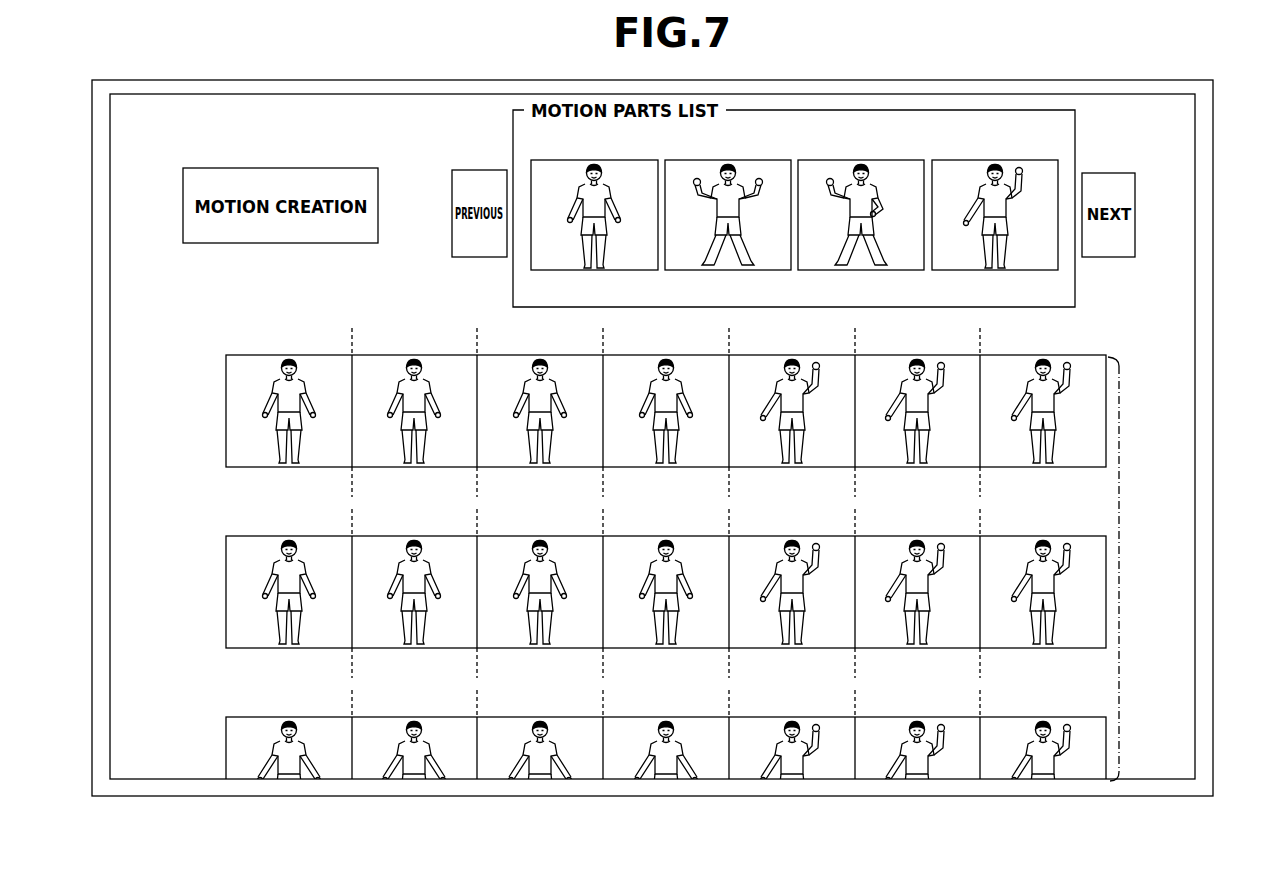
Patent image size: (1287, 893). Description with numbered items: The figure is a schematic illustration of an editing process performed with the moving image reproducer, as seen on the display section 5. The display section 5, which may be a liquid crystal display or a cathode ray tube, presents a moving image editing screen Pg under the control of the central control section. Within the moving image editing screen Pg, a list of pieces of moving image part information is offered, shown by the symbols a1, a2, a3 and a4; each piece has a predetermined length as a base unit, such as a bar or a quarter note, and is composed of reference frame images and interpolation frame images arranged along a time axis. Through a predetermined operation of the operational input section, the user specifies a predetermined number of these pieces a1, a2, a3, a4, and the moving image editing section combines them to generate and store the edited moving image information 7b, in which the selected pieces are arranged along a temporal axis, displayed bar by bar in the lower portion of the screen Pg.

The display section 5 is at (693, 80).
The moving image editing screen Pg is at (1062, 94).
The moving image part information a1 is at (548, 157).
The moving image part information a2 is at (738, 157).
The moving image part information a3 is at (857, 157).
The moving image part information a4 is at (978, 157).
The edited moving image information 7b is at (1121, 569).